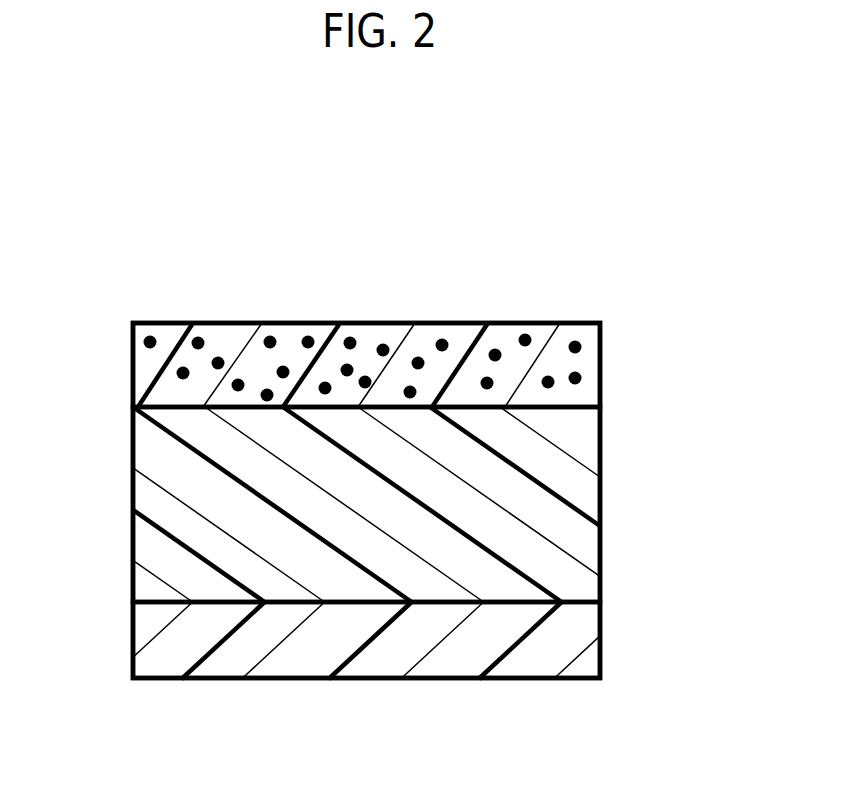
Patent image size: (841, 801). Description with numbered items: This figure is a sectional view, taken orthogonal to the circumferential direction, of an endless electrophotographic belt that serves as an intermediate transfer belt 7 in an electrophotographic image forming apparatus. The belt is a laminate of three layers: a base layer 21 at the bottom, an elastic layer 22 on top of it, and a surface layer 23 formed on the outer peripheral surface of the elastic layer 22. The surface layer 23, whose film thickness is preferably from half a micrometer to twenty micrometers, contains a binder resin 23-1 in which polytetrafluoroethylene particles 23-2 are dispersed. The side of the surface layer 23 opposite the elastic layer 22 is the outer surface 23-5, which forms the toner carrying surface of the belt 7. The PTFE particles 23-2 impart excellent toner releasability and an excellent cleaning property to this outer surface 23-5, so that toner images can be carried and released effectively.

The intermediate transfer belt 7 is at (188, 278).
The base layer 21 is at (612, 637).
The elastic layer 22 is at (612, 495).
The surface layer 23 is at (426, 304).
The binder resin 23-1 is at (585, 377).
The polytetrafluoroethylene (PTFE) particles 23-2 is at (581, 340).
The outer surface 23-5 is at (325, 318).